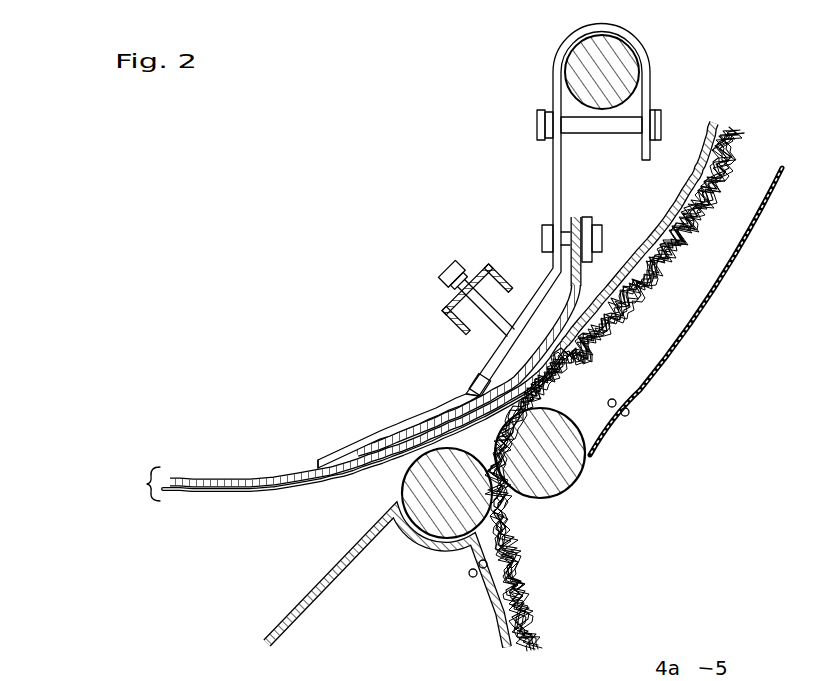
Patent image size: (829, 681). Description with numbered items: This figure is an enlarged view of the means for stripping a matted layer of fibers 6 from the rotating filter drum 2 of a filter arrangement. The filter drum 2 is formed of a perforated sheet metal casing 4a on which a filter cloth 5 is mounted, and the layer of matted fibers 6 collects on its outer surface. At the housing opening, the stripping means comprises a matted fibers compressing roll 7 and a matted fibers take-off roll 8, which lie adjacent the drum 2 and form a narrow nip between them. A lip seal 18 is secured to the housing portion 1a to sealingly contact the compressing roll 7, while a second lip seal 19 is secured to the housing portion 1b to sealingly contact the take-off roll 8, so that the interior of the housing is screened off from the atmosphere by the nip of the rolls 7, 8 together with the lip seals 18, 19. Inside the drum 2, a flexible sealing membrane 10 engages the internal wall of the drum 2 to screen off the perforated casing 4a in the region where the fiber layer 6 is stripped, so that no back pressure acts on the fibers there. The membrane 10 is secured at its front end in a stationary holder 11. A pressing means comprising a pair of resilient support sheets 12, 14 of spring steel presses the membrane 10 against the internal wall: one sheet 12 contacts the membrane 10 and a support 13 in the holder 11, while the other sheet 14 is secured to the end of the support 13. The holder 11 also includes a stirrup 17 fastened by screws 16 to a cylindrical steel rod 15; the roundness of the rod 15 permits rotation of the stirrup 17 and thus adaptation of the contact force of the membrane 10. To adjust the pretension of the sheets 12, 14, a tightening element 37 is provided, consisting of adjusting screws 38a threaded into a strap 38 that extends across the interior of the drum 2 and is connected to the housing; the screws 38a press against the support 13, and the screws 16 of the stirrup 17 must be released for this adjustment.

The filter drum 2 is at (147, 483).
The perforated sheet metal casing 4a is at (193, 478).
The filter cloth 5 is at (209, 491).
The layer of matted fibers 6 is at (750, 153).
The matted fibers compressing roll 7 is at (573, 493).
The matted fibers take-off roll 8 is at (401, 538).
The housing portion 1a is at (688, 337).
The housing portion 1b is at (453, 552).
The flexible sealing membrane 10 is at (317, 461).
The stationary holder 11 is at (514, 139).
The resilient support sheet 12 is at (518, 358).
The support 13 is at (543, 290).
The resilient support sheet 14 is at (333, 458).
The cylindrical steel rod 15 is at (619, 63).
The screws 16 is at (607, 130).
The stirrup 17 is at (553, 180).
The lip seal 18 is at (606, 436).
The second lip seal 19 is at (492, 548).
The tightening element 37 is at (410, 287).
The strap 38 is at (450, 325).
The adjusting screws 38a is at (450, 265).